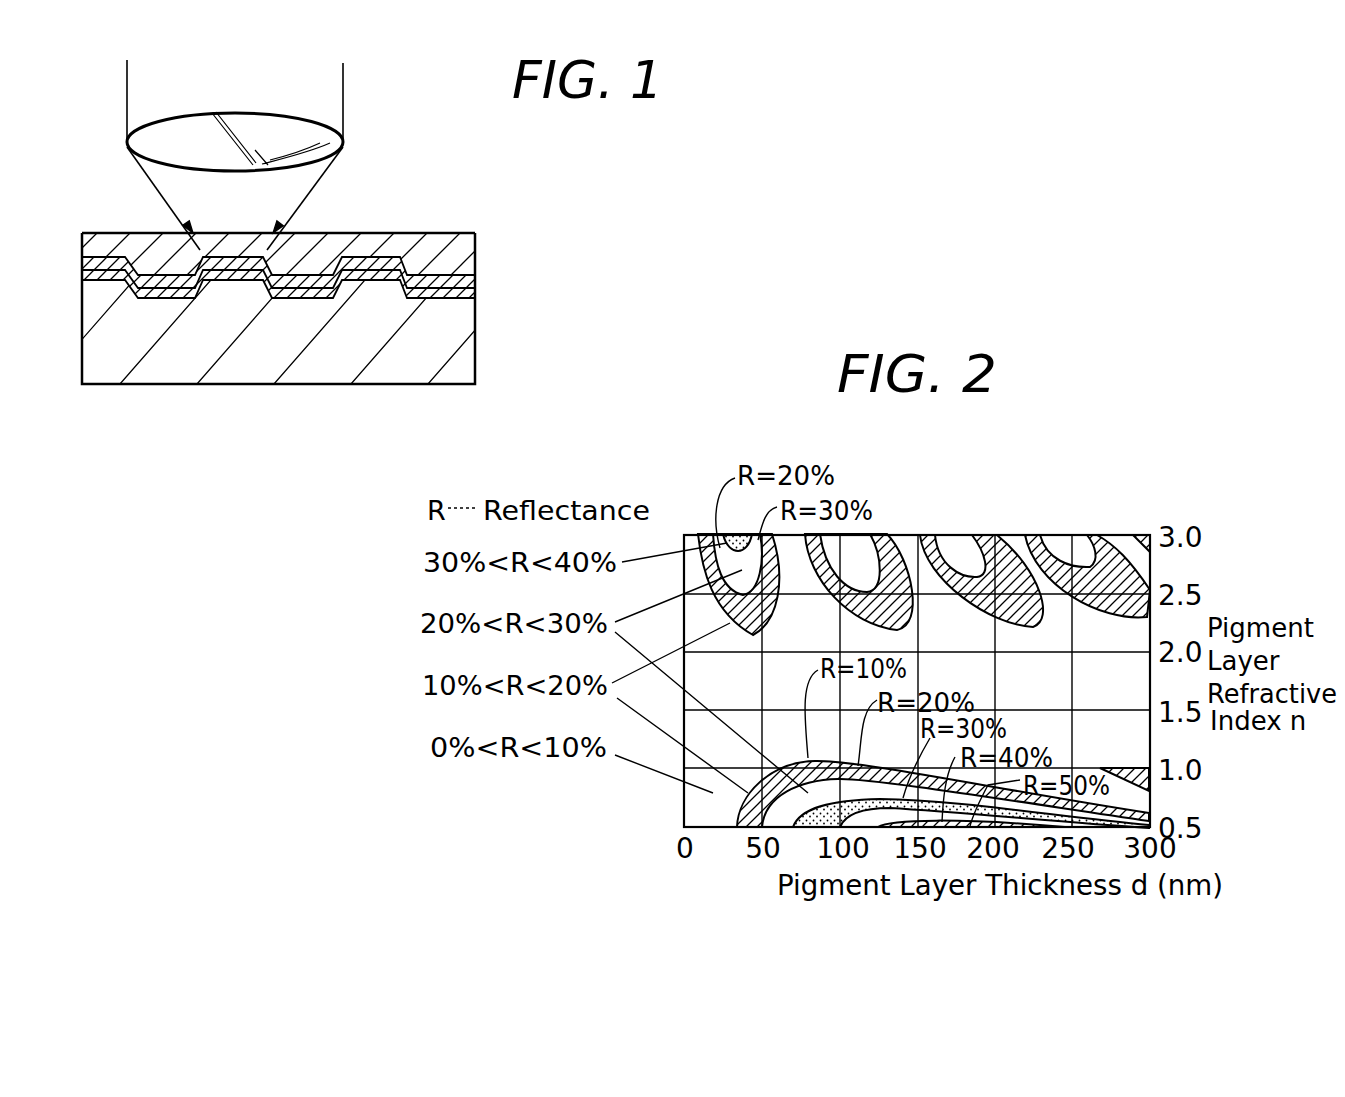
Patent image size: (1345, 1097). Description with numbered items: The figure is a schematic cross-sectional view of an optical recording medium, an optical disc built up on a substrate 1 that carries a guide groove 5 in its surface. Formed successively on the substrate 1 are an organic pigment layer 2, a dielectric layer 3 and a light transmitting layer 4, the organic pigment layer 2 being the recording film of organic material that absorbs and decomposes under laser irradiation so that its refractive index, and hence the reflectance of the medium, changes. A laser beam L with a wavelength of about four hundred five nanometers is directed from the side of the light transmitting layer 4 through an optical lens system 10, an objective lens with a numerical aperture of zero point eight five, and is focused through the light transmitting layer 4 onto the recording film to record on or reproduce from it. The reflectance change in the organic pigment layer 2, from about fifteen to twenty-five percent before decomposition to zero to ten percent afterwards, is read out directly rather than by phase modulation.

The laser beam L is at (343, 83).
The optical lens system 10 is at (320, 132).
The substrate 1 is at (462, 360).
The organic pigment layer 2 is at (475, 292).
The dielectric layer 3 is at (475, 277).
The light transmitting layer 4 is at (458, 252).
The guide groove 5 is at (242, 281).